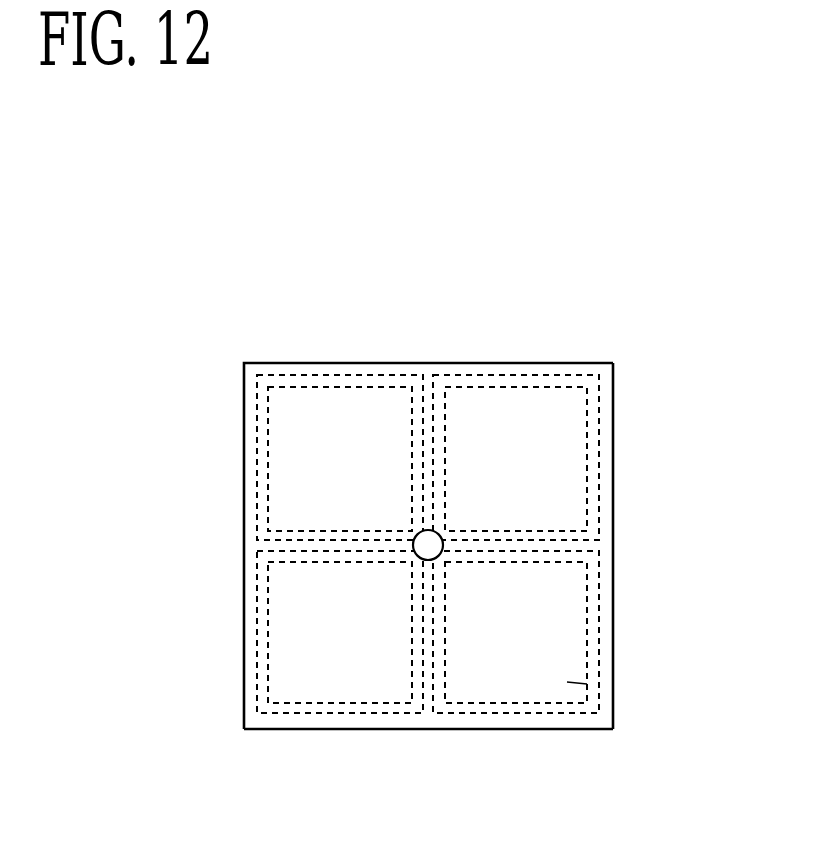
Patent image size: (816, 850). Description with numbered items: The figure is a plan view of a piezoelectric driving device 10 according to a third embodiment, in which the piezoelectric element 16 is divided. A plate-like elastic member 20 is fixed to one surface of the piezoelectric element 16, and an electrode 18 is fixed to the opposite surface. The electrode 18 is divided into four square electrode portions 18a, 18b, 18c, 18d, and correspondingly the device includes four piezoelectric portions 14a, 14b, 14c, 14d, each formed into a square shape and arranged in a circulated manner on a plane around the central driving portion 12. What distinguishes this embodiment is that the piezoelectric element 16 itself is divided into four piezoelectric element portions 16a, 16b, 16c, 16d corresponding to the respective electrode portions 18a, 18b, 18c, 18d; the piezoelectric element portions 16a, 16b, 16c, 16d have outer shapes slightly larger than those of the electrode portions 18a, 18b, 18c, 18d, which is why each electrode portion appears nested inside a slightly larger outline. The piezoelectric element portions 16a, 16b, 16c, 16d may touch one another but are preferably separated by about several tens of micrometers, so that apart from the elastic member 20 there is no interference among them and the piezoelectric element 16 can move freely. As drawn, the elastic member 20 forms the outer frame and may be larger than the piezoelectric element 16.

The piezoelectric driving device 10 is at (446, 486).
The driving portion 12 is at (433, 533).
The piezoelectric portion 14a is at (614, 470).
The piezoelectric portion 14b is at (570, 731).
The piezoelectric portion 14c is at (327, 731).
The piezoelectric portion 14d is at (259, 364).
The piezoelectric element 16 is at (562, 373).
The piezoelectric element portion 16a is at (598, 498).
The piezoelectric element portion 16b is at (598, 628).
The piezoelectric element portion 16c is at (258, 628).
The piezoelectric element portion 16d is at (258, 452).
The electrode 18 is at (488, 385).
The electrode portion 18a is at (560, 435).
The electrode portion 18b is at (507, 665).
The electrode portion 18c is at (385, 665).
The electrode portion 18d is at (338, 403).
The elastic member 20 is at (567, 682).